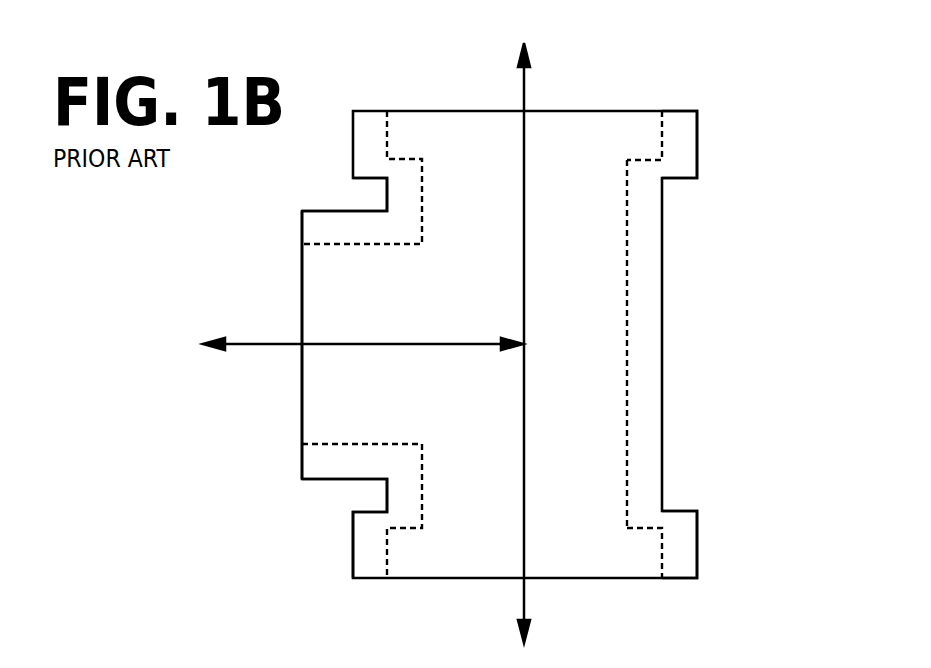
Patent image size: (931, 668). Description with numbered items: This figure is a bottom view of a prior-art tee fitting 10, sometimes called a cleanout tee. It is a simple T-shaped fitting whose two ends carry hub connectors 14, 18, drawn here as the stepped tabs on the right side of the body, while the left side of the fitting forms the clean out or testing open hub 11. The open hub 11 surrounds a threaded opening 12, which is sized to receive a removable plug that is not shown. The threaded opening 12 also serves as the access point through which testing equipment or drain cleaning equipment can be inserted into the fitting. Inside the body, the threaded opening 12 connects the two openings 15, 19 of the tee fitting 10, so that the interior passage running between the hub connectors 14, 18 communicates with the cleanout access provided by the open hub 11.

The tee fitting 10 is at (663, 361).
The clean out or testing open hub 11 is at (302, 229).
The threaded opening 12 is at (319, 395).
The hub connector 14 is at (698, 147).
The opening 15 is at (557, 178).
The hub connector 18 is at (698, 545).
The opening 19 is at (457, 560).